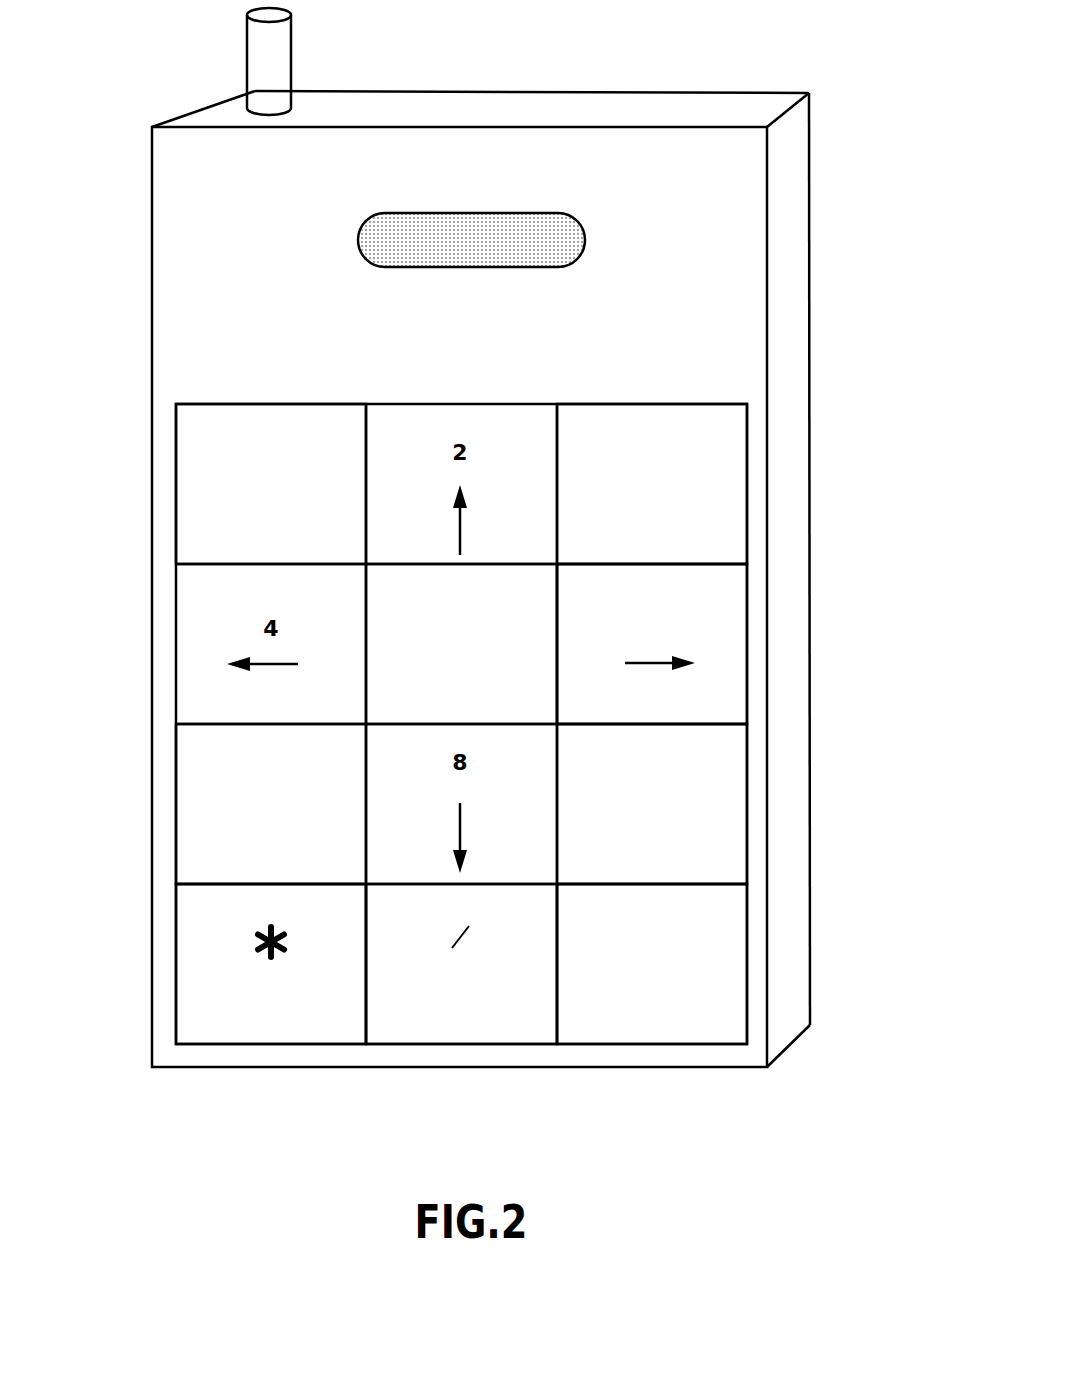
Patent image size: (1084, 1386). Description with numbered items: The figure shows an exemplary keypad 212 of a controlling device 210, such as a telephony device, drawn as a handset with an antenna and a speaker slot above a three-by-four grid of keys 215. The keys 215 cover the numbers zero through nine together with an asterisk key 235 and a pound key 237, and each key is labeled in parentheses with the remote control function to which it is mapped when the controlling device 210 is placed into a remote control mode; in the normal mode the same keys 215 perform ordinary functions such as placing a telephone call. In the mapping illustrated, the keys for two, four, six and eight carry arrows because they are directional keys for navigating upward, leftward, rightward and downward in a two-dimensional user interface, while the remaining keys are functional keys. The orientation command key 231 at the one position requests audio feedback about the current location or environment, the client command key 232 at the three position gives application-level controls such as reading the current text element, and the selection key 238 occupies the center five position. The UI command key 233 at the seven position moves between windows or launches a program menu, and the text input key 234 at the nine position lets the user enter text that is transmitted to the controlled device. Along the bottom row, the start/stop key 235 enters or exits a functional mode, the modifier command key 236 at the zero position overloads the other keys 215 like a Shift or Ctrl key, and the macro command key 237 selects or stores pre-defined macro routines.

The controlling device 210 is at (809, 93).
The keypad 212 is at (640, 385).
The keys 215 is at (762, 644).
The orientation command key 231 is at (176, 471).
The client command key 232 is at (738, 480).
The UI command key 233 is at (176, 784).
The text input key 234 is at (737, 820).
The start/stop key 235 is at (238, 1045).
The modifier command key 236 is at (420, 1045).
The macro command key 237 is at (610, 1045).
The select key 238 is at (420, 657).